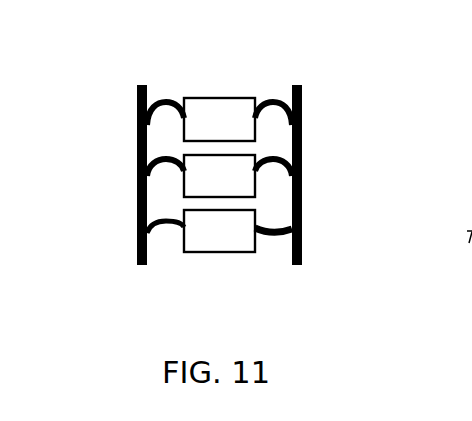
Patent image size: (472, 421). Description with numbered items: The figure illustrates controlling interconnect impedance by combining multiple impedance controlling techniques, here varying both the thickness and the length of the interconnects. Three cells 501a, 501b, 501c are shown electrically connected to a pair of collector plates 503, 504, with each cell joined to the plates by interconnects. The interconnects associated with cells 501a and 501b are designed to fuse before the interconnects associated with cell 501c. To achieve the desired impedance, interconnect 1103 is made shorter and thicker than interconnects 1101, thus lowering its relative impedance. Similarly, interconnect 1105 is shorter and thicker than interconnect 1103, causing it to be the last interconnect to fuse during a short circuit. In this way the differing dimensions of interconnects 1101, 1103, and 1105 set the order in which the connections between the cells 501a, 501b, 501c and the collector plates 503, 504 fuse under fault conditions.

The collector plate 503 is at (137, 123).
The collector plate 504 is at (302, 120).
The cell 501a is at (232, 98).
The cell 501b is at (250, 157).
The cell 501c is at (233, 253).
The interconnect 1101 is at (166, 102).
The interconnect 1103 is at (166, 222).
The interconnect 1105 is at (277, 223).